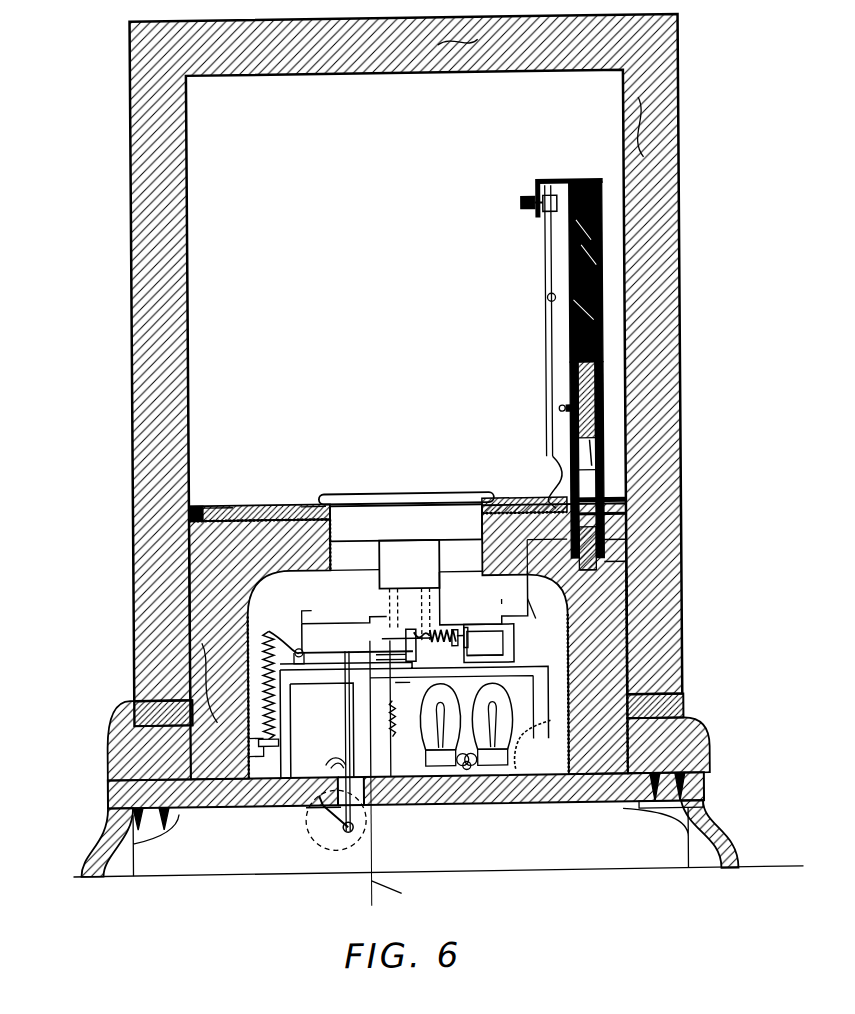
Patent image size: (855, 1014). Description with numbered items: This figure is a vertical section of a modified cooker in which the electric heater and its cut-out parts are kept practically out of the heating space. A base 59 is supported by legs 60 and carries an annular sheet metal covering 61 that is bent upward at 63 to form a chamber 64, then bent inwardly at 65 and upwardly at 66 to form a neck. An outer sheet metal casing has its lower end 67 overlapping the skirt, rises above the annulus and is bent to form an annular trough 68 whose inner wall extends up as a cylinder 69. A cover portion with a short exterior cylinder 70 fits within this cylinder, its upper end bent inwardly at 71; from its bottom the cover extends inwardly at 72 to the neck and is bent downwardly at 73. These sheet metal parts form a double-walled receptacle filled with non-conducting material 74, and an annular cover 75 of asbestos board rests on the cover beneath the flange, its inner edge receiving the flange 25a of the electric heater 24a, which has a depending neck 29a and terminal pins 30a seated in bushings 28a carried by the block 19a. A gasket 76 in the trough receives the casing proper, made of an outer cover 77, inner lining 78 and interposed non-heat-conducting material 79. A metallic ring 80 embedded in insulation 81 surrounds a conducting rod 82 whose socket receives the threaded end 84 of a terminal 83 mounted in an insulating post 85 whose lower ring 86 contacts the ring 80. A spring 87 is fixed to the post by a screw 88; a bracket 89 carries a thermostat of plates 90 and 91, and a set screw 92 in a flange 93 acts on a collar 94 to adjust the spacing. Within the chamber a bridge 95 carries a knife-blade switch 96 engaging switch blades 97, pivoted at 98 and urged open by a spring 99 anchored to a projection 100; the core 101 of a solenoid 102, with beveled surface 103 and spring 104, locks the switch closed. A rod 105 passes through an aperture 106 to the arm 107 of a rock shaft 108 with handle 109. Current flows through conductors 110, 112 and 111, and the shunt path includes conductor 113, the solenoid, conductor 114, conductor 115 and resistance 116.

The base 59 is at (438, 841).
The legs 60 is at (705, 820).
The annular sheet metal covering 61 is at (630, 782).
The upward bend 63 is at (568, 642).
The chamber 64 is at (344, 623).
The inward bend 65 is at (509, 586).
The neck 66 is at (481, 550).
The lower end of outer casing 67 is at (705, 792).
The annular trough 68 is at (660, 732).
The cylindrical inner wall 69 is at (610, 635).
The short exterior cylinder 70 is at (222, 503).
The inwardly bent upper end 71 is at (194, 505).
The inwardly extending cover portion 72 is at (255, 506).
The downwardly bent portion 73 is at (332, 534).
The non-conducting material 74 is at (260, 649).
The annular cover 75 is at (295, 506).
The gasket 76 is at (681, 709).
The outer cylindrical sheet metal cover 77 is at (681, 227).
The inner sheet metal lining 78 is at (464, 72).
The non-heat-conducting material 79 is at (650, 152).
The metallic ring 80 is at (627, 505).
The insulating and non-conducting material 81 is at (625, 542).
The rod 82 is at (598, 564).
The terminal 83 is at (596, 460).
The threaded end 84 is at (595, 502).
The post 85 is at (569, 349).
The ring 86 is at (553, 504).
The spring 87 is at (552, 472).
The screw 88 is at (560, 411).
The bracket 89 is at (547, 180).
The metal plate 90 is at (545, 262).
The metal plate 91 is at (547, 300).
The set screw 92 is at (522, 206).
The flange 93 is at (542, 192).
The collar 94 is at (562, 202).
The bridge 95 is at (323, 678).
The knife-blade switch 96 is at (326, 659).
The switch blades 97 is at (396, 641).
The pivot 98 is at (291, 649).
The spring 99 is at (215, 683).
The projection 100 is at (265, 751).
The core 101 is at (485, 650).
The solenoid 102 is at (489, 643).
The beveled surface 103 is at (418, 632).
The spring 104 is at (453, 631).
The rod 105 is at (343, 730).
The aperture 106 is at (343, 780).
The arm 107 is at (343, 834).
The rock shaft 108 is at (316, 826).
The operating handle 109 is at (308, 840).
The conductor 110 is at (354, 841).
The conductor 111 is at (403, 890).
The conductor 112 is at (305, 611).
The conductor 113 is at (406, 709).
The conductor 114 is at (544, 611).
The conductor 115 is at (437, 742).
The resistance 116 is at (466, 721).
The block 19a is at (440, 598).
The electric heater 24a is at (406, 522).
The outwardly projecting flange 25a is at (462, 497).
The bushings 28a is at (430, 630).
The depending neck 29a is at (384, 565).
The terminal pins 30a is at (388, 598).